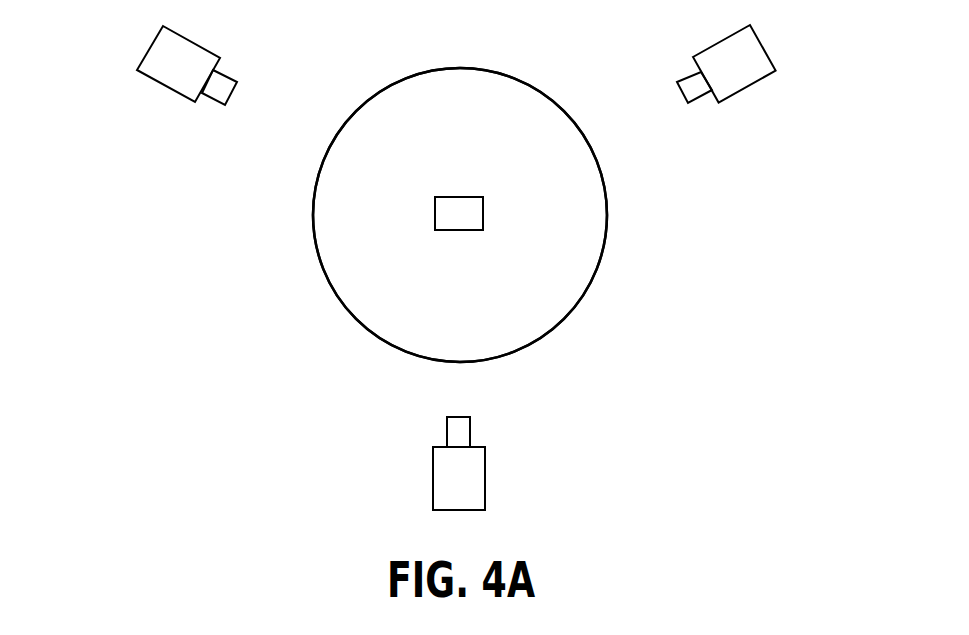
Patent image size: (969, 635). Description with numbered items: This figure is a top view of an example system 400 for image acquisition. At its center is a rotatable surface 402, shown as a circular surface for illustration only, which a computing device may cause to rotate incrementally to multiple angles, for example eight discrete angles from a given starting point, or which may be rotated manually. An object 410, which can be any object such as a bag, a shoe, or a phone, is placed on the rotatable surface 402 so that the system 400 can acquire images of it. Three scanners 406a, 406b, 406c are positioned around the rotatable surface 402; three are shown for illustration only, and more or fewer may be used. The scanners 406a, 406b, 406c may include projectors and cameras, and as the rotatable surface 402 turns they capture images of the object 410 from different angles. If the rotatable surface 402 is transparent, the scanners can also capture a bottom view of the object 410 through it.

The system for image acquisition 400 is at (340, 83).
The rotatable surface 402 is at (570, 312).
The object 410 is at (483, 212).
The scanner 406a is at (162, 84).
The scanner 406b is at (750, 85).
The scanner 406c is at (485, 477).